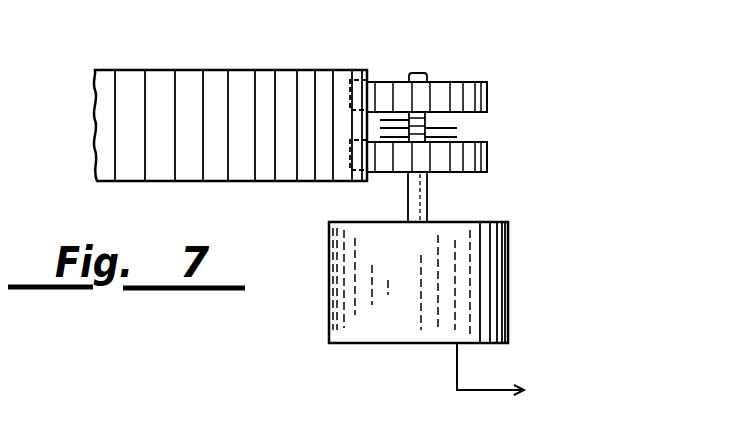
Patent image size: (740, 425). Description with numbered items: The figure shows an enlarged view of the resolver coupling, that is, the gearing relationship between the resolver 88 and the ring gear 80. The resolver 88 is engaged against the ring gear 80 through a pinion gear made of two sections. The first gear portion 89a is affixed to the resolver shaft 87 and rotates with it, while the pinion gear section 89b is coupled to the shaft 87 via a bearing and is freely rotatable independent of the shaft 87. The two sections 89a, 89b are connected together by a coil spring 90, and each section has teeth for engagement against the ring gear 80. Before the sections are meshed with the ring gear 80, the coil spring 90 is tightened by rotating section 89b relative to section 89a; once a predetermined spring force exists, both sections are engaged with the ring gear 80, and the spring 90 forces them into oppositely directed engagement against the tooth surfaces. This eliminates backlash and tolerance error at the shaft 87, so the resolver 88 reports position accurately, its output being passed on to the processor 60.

The ring gear 80 is at (217, 70).
The pinion gear section 89b is at (487, 88).
The first gear portion 89a is at (487, 163).
The coil spring 90 is at (425, 121).
The resolver shaft 87 is at (428, 198).
The resolver 88 is at (508, 283).
The processor 60 is at (577, 372).